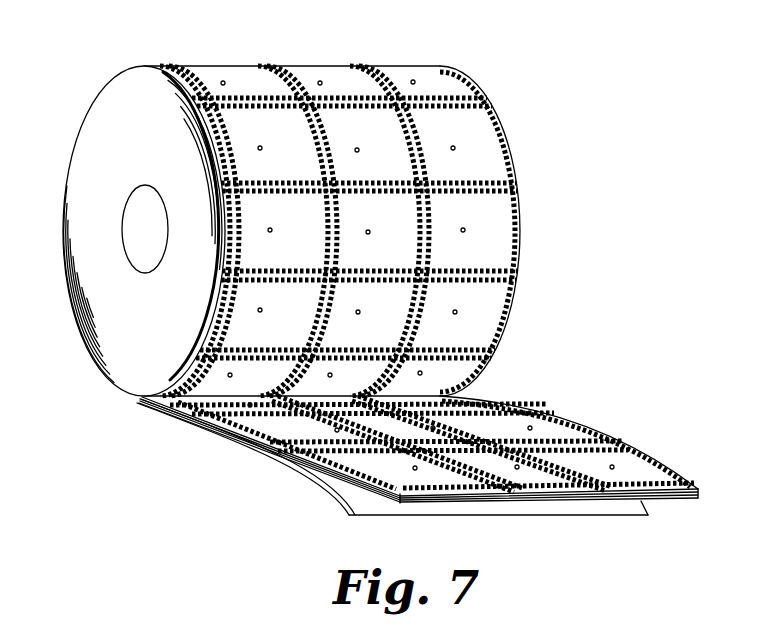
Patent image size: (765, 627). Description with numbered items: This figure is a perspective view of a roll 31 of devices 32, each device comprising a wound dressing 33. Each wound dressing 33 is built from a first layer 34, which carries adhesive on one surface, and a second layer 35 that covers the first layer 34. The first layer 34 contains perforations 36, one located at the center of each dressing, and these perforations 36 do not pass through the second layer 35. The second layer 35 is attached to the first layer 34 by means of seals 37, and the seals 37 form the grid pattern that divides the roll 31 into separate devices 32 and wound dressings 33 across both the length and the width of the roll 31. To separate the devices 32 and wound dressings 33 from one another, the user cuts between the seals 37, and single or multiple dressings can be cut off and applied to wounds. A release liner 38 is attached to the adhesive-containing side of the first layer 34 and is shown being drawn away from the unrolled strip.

The roll 31 is at (88, 101).
The devices 32 is at (301, 475).
The wound dressings 33 is at (404, 503).
The first layer 34 is at (683, 500).
The second layer 35 is at (643, 477).
The perforations 36 is at (631, 444).
The seals 37 is at (563, 440).
The release liner 38 is at (533, 511).